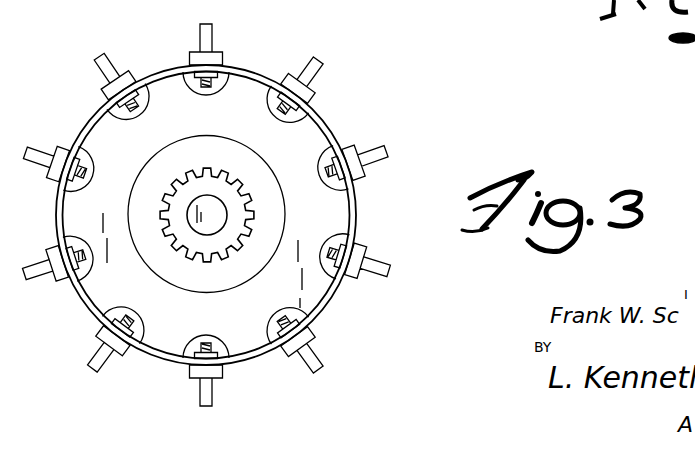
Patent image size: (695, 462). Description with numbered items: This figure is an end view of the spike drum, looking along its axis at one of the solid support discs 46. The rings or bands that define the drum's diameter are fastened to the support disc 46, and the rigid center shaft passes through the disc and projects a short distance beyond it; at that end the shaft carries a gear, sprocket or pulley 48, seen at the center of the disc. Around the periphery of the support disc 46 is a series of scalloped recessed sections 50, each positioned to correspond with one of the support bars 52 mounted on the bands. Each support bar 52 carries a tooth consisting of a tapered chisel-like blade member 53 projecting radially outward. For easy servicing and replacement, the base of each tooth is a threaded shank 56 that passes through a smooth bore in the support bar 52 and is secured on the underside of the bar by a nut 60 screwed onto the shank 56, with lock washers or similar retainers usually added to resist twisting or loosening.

The solid support disc 46 is at (122, 140).
The gear, sprocket or pulley 48 is at (237, 202).
The scalloped recessed sections 50 is at (303, 108).
The support bars 52 is at (221, 209).
The tapered chisel-like blade member 53 is at (304, 71).
The threaded shank 56 is at (358, 188).
The nut 60 is at (341, 142).